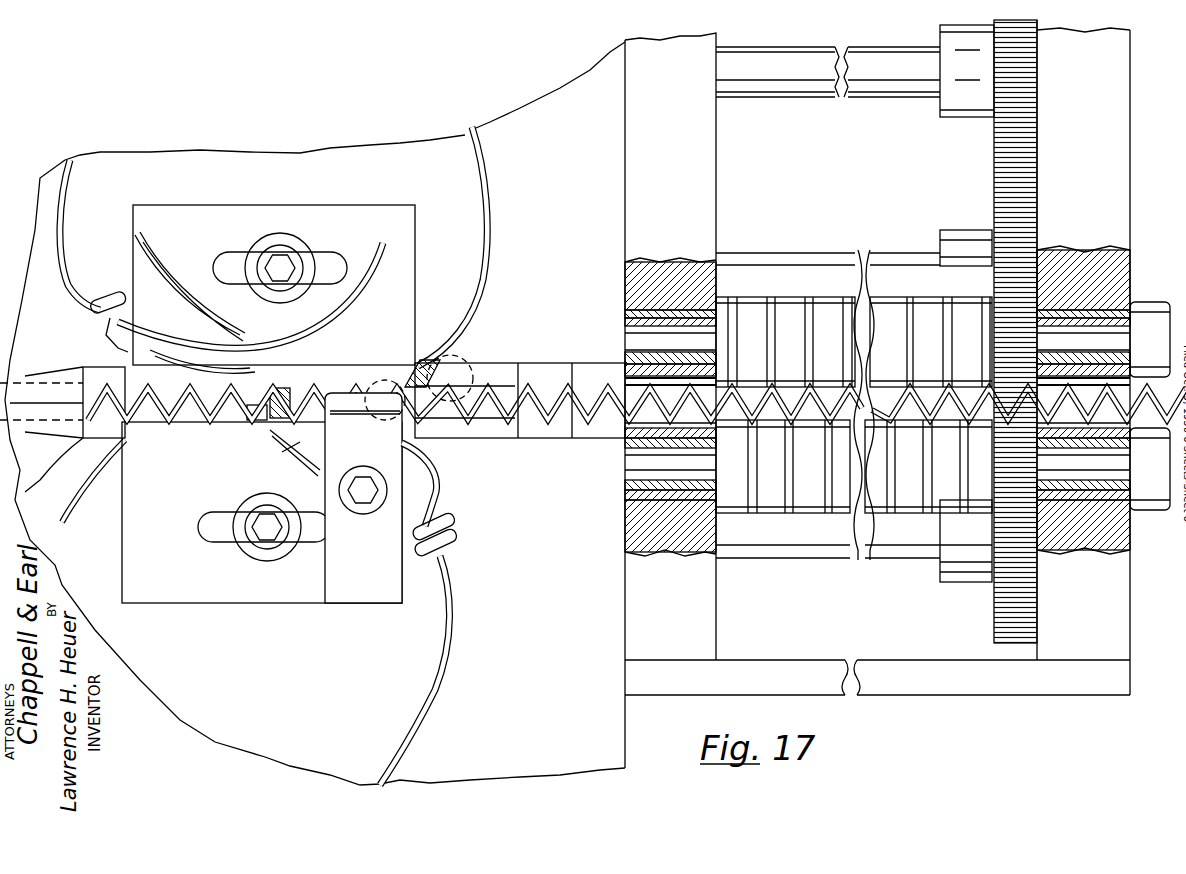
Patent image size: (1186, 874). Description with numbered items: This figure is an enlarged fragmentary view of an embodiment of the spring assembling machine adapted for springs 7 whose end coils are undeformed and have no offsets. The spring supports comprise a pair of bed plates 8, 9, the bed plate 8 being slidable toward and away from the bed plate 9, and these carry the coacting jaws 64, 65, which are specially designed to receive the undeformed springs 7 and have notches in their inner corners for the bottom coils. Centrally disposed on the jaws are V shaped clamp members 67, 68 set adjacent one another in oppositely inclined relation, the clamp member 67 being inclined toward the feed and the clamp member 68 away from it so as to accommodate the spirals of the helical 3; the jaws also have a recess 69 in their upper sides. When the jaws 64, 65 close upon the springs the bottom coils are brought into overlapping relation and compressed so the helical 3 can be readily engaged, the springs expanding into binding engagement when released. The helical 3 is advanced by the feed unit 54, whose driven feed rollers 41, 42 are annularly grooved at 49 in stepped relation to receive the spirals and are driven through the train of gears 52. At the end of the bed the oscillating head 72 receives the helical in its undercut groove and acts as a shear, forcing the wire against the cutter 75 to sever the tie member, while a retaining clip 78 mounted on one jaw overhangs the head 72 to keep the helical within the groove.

The helical 3 is at (542, 393).
The spring 7 is at (482, 237).
The bed plate 8 is at (583, 765).
The bed plate 9 is at (581, 348).
The feed roller 41 is at (790, 305).
The feed roller 42 is at (768, 540).
The annular grooves 49 is at (772, 300).
The train of gears 52 is at (998, 192).
The feed unit 54 is at (945, 690).
The jaw 64 is at (224, 600).
The jaw 65 is at (365, 216).
The V shaped clamp member 67 is at (262, 420).
The V shaped clamp member 68 is at (158, 272).
The recess 69 is at (295, 458).
The oscillating head 72 is at (410, 425).
The cutter 75 is at (425, 375).
The retaining clip 78 is at (390, 450).